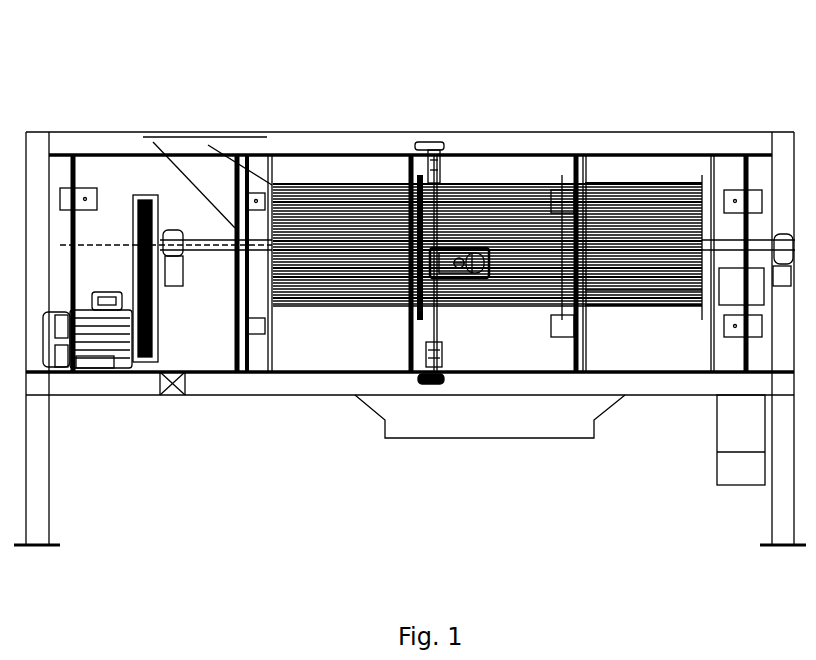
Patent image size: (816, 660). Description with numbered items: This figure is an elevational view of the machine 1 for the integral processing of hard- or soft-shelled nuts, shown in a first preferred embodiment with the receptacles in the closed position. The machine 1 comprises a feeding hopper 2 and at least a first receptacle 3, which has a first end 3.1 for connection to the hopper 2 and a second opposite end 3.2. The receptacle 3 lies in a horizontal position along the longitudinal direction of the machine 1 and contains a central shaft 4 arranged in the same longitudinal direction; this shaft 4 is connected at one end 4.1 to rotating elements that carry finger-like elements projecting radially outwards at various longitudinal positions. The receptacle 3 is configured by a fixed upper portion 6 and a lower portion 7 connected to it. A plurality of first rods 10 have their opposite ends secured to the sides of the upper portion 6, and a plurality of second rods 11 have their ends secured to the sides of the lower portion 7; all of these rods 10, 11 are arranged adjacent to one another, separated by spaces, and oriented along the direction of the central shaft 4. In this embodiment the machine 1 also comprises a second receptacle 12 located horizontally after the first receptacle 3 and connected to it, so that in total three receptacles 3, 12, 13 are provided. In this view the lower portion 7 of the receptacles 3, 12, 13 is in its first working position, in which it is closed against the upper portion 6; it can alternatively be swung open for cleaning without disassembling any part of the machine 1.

The machine 1 is at (637, 113).
The feeding hopper 2 is at (215, 175).
The first receptacle 3 is at (344, 306).
The first end 3.1 is at (273, 277).
The second opposite end 3.2 is at (402, 306).
The central shaft 4 is at (213, 260).
The end of the central shaft 4.1 is at (163, 237).
The fixed upper portion 6 is at (677, 183).
The lower portion 7 is at (641, 287).
The first rods 10 is at (449, 213).
The second rods 11 is at (505, 300).
The second receptacle 12 is at (525, 307).
The third receptacle 13 is at (604, 307).